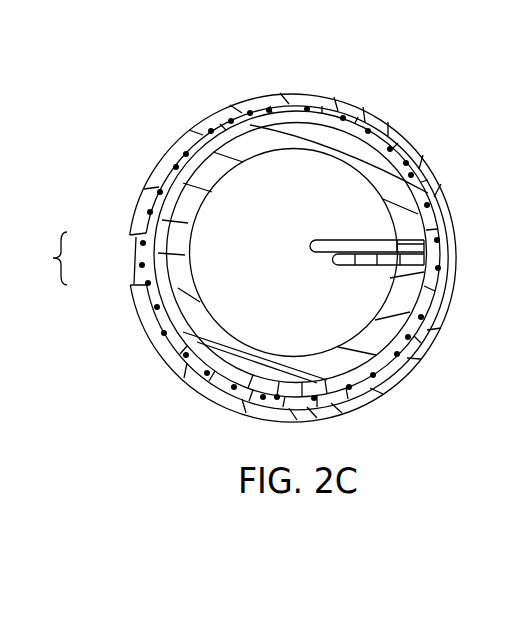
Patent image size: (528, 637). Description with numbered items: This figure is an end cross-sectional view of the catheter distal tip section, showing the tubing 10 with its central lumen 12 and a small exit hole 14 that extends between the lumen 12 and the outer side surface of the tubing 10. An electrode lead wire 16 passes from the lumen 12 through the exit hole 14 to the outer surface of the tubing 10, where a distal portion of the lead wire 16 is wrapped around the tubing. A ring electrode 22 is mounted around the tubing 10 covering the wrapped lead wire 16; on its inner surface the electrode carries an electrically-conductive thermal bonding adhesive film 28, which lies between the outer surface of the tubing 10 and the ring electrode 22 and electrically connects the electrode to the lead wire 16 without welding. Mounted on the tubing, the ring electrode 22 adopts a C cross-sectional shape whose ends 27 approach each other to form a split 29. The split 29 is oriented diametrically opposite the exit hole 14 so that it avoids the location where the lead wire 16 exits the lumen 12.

The tubing 10 is at (243, 163).
The lumen 12 is at (288, 284).
The exit hole 14 is at (413, 241).
The electrode lead wire 16 is at (258, 119).
The ring electrode 22 is at (205, 118).
The ends 27 is at (130, 230).
The thermal bonding adhesive film 28 is at (314, 106).
The split 29 is at (43, 258).